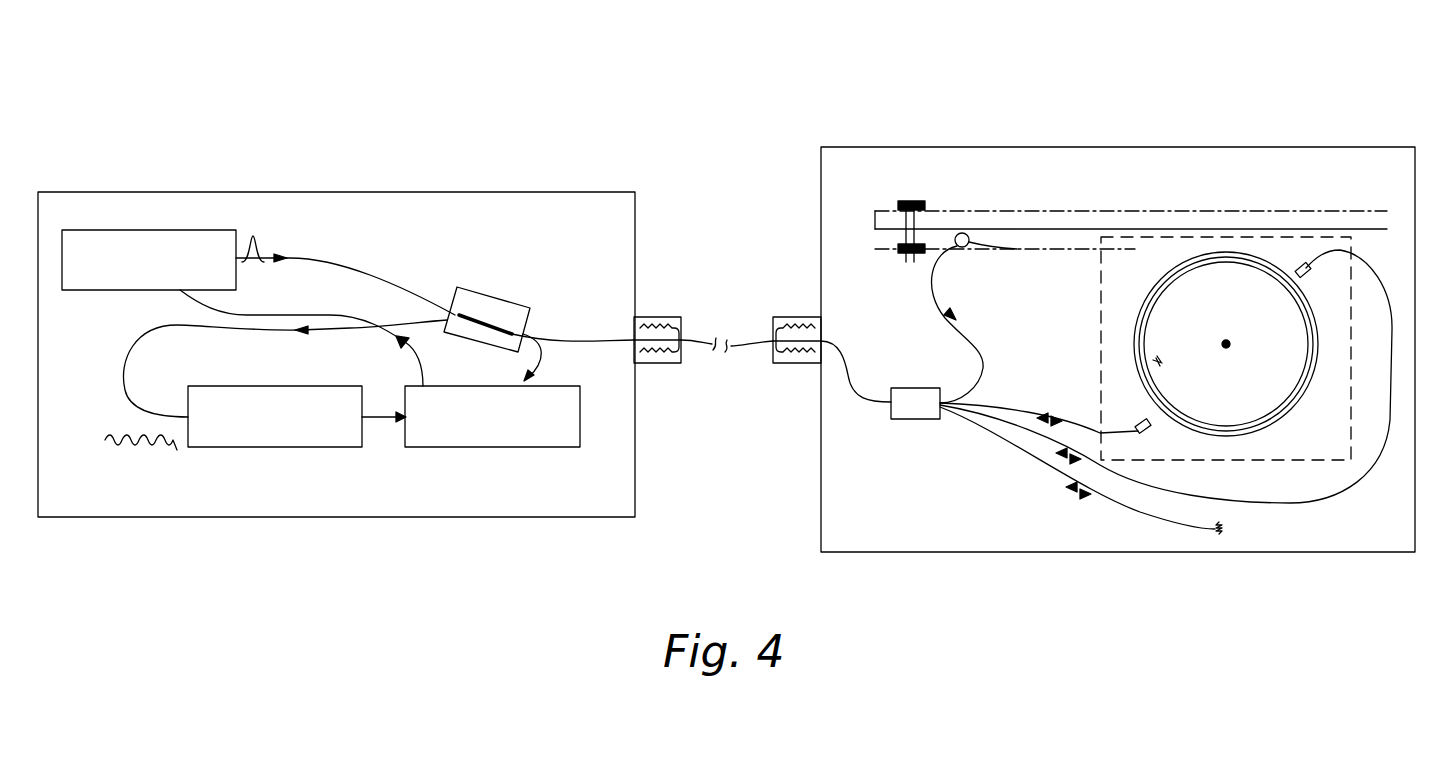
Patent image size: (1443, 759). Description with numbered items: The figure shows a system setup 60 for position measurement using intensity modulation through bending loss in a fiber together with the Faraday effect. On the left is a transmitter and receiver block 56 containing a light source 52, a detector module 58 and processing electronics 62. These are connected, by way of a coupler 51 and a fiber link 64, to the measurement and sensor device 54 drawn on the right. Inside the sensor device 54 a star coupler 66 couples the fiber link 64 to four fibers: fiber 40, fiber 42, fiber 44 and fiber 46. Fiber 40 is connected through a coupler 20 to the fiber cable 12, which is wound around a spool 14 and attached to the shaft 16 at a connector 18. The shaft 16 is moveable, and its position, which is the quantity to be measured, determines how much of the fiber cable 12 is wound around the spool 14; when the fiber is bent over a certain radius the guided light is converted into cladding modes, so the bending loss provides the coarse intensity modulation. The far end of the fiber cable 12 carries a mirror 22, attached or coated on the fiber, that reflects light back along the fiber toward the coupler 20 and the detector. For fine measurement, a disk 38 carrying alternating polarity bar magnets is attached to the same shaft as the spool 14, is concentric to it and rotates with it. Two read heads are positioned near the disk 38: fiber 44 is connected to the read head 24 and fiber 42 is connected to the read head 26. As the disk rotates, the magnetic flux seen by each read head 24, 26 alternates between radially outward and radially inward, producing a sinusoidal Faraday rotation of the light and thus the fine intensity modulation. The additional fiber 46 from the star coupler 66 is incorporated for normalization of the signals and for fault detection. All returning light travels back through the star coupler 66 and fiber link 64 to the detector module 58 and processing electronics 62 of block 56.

The system setup 60 is at (716, 80).
The block 56 is at (538, 192).
The light source 52 is at (136, 230).
The coupler 51 is at (532, 316).
The detector module 58 is at (305, 447).
The processing electronics 62 is at (525, 447).
The fiber link 64 is at (705, 345).
The measurement and sensor device 54 is at (821, 165).
The shaft 16 is at (1128, 211).
The connector 18 is at (900, 252).
The coupler 20 is at (970, 247).
The fiber cable 12 is at (1062, 250).
The fiber 40 is at (974, 346).
The star coupler 66 is at (907, 388).
The fiber 42 is at (1010, 405).
The fiber 44 is at (1360, 487).
The fiber 46 is at (1036, 472).
The spool 14 is at (1303, 397).
The disk 38 is at (1273, 420).
The mirror 22 is at (1160, 364).
The read head 24 is at (1307, 274).
The read head 26 is at (1146, 430).